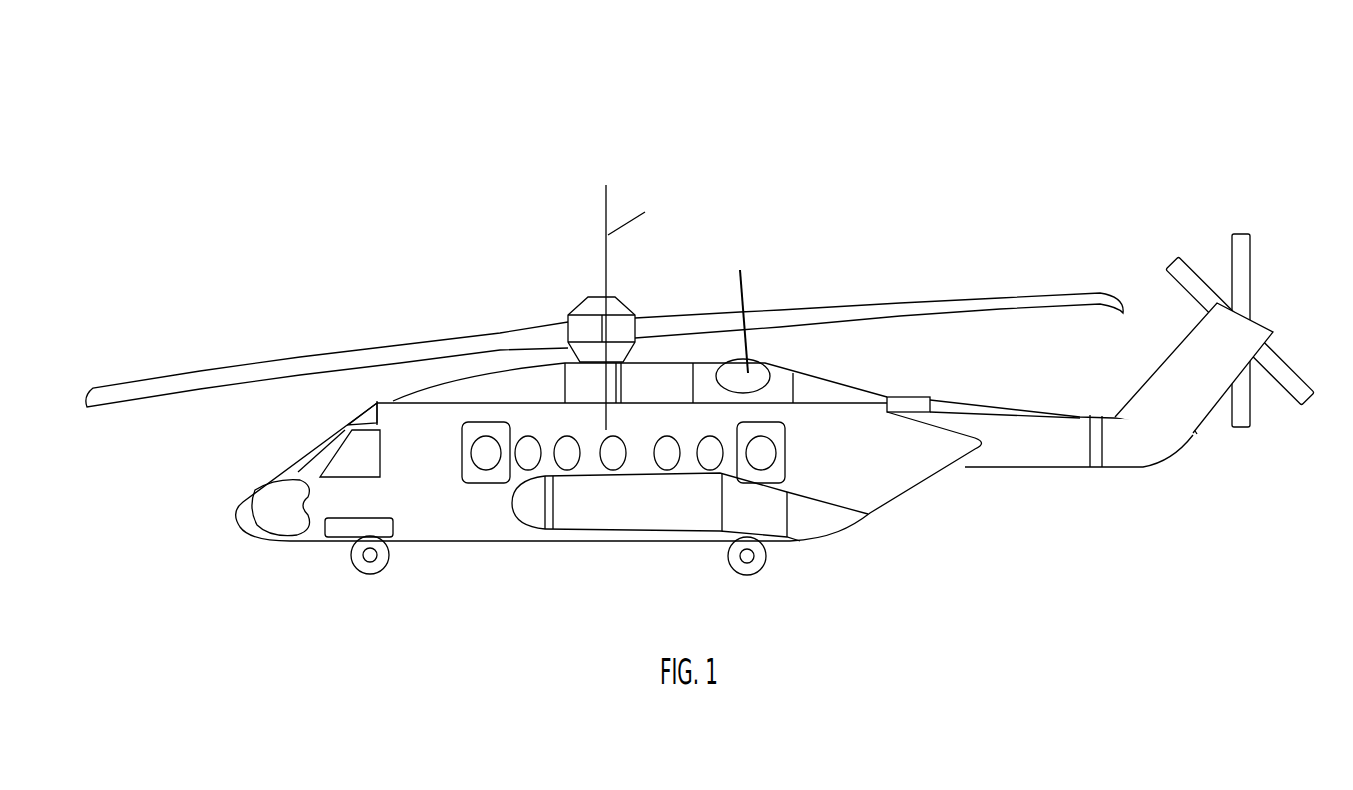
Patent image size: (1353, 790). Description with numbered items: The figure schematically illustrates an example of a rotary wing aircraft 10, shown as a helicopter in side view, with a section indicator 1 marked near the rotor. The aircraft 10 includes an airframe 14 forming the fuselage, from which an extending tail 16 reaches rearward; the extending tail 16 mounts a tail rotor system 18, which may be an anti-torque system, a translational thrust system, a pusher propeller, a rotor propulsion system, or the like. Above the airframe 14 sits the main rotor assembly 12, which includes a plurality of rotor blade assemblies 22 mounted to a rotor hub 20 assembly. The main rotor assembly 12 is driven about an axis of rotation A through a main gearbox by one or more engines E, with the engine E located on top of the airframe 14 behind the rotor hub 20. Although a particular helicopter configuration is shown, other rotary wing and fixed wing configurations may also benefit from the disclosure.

The rotary wing aircraft 10 is at (700, 321).
The main rotor assembly 12 is at (604, 307).
The airframe 14 is at (443, 531).
The extending tail 16 is at (1047, 468).
The tail rotor system 18 is at (1268, 313).
The rotor hub 20 is at (622, 305).
The rotor blade assemblies 22 is at (431, 338).
The section indicator 1 is at (563, 350).